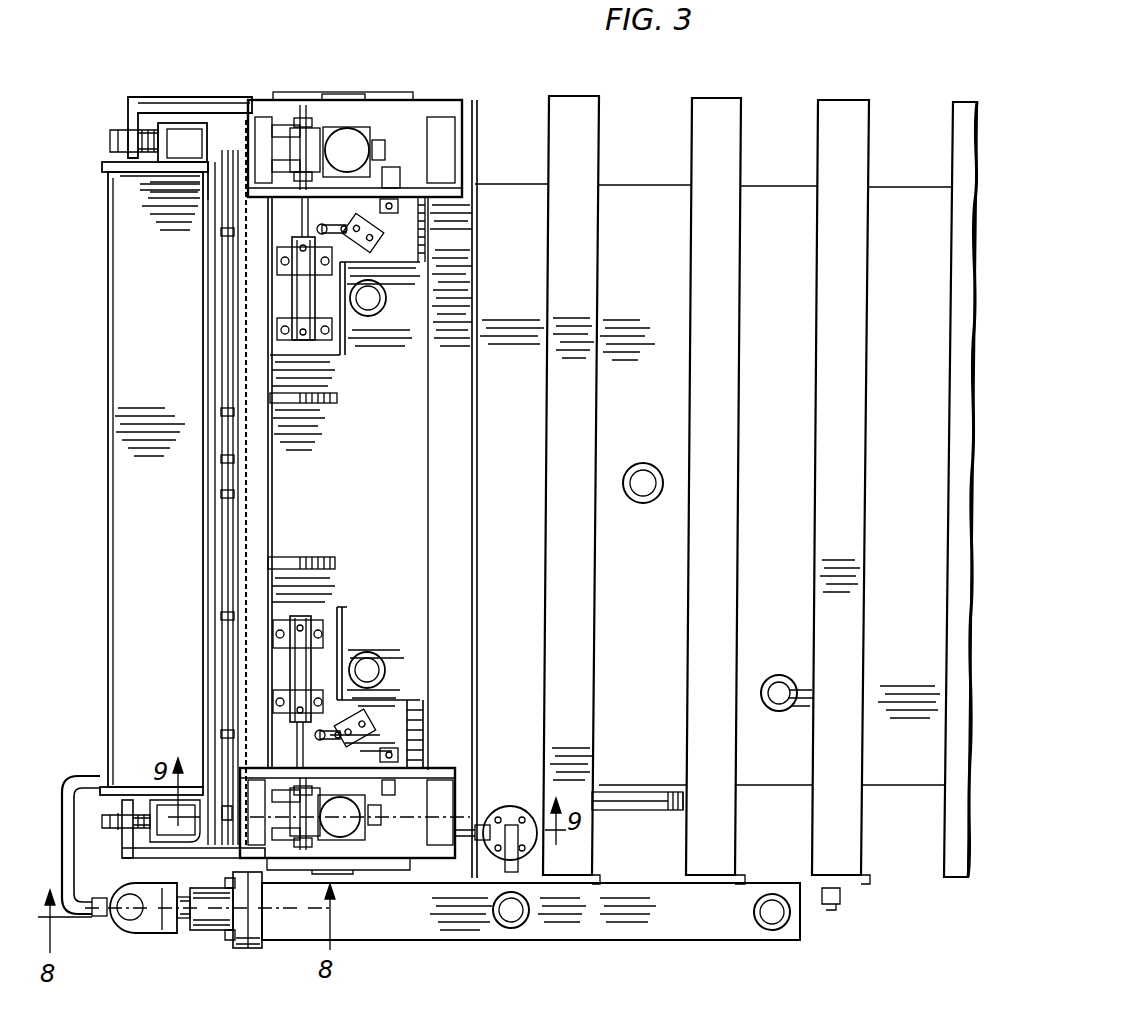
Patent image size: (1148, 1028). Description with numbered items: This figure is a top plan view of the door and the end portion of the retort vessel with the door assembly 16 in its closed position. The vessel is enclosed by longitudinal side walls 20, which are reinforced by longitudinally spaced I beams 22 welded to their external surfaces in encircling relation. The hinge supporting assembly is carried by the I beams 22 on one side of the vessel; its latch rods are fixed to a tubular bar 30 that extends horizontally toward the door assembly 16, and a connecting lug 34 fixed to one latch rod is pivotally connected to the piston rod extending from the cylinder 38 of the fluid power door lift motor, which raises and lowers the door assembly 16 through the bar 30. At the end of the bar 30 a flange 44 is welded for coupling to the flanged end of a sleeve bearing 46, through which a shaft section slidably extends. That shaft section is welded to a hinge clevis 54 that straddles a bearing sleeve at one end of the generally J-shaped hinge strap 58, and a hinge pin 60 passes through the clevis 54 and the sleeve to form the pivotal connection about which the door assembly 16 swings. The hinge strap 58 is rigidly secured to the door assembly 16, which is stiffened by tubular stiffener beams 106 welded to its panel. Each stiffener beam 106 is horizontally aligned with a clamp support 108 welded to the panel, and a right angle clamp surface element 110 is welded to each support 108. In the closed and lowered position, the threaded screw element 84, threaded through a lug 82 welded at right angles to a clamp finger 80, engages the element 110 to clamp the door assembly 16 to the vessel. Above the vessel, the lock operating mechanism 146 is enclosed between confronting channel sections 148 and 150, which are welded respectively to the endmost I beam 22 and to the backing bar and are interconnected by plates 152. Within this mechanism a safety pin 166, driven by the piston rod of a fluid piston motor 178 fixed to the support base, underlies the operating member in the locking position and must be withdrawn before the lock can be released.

The door assembly 16 is at (100, 212).
The side wall 20 is at (648, 198).
The I beam 22 is at (735, 137).
The tubular bar 30 is at (658, 925).
The connecting lug 34 is at (512, 856).
The cylinder 38 is at (512, 808).
The flange 44 is at (255, 940).
The sleeve bearing 46 is at (218, 928).
The hinge clevis 54 is at (153, 928).
The hinge strap 58 is at (72, 790).
The hinge pin 60 is at (128, 916).
The clamp finger 80 is at (200, 852).
The lug 82 is at (125, 800).
The threaded screw element 84 is at (106, 826).
The tubular stiffener beam 106 is at (118, 468).
The clamp support 108 is at (183, 148).
The right angle clamp surface element 110 is at (183, 125).
The operating mechanism 146 is at (384, 132).
The channel section 148 is at (460, 152).
The channel section 150 is at (252, 142).
The plate 152 is at (438, 200).
The safety pin 166 is at (290, 150).
The fluid piston motor 178 is at (322, 290).